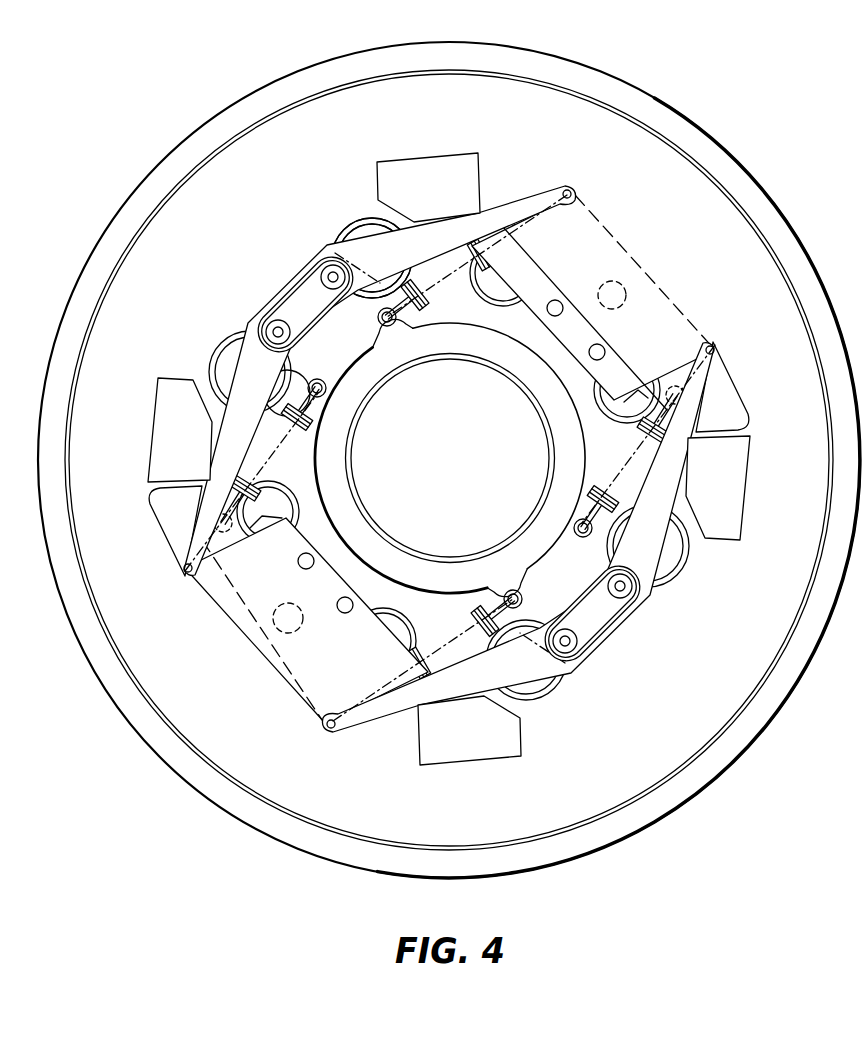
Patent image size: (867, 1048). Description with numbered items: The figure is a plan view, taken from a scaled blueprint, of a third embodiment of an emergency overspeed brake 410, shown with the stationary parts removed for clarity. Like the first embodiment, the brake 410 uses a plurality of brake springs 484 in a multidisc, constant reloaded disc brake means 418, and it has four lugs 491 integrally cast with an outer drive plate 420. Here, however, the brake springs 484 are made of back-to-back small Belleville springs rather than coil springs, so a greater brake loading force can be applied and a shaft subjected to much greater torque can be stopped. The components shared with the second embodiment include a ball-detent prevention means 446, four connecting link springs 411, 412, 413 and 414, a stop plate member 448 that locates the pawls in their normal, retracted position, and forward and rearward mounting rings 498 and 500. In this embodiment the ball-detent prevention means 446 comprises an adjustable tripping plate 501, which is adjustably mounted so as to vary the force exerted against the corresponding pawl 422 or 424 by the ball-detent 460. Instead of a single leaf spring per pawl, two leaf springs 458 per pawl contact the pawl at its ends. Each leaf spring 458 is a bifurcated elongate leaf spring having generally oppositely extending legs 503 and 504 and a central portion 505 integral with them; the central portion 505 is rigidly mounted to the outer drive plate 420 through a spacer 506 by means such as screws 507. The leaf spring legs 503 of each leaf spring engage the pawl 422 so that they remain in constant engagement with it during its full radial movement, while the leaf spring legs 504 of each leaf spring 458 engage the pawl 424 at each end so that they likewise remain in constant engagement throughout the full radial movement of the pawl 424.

The emergency overspeed brake 410 is at (679, 86).
The connecting link spring 411 is at (492, 607).
The connecting link spring 412 is at (455, 437).
The connecting link spring 413 is at (554, 420).
The connecting link spring 414 is at (422, 302).
The multidisc constant reloaded disc brake means 418 is at (333, 238).
The outer drive plate 420 is at (553, 807).
The pawl 422 is at (338, 670).
The pawl 424 is at (596, 280).
The ball-detent prevention means 446 is at (672, 300).
The stop plate member 448 is at (437, 323).
The leaf spring 458 is at (250, 300).
The ball-detent 460 is at (624, 307).
The brake spring 484 is at (346, 225).
The lug 491 is at (471, 195).
The forward mounting ring 498 is at (379, 319).
The rearward mounting ring 500 is at (334, 366).
The adjustable tripping plate 501 is at (658, 248).
The leaf spring leg 503 is at (416, 225).
The leaf spring leg 504 is at (160, 410).
The central portion 505 is at (285, 288).
The spacer 506 is at (247, 330).
The screw 507 is at (330, 290).